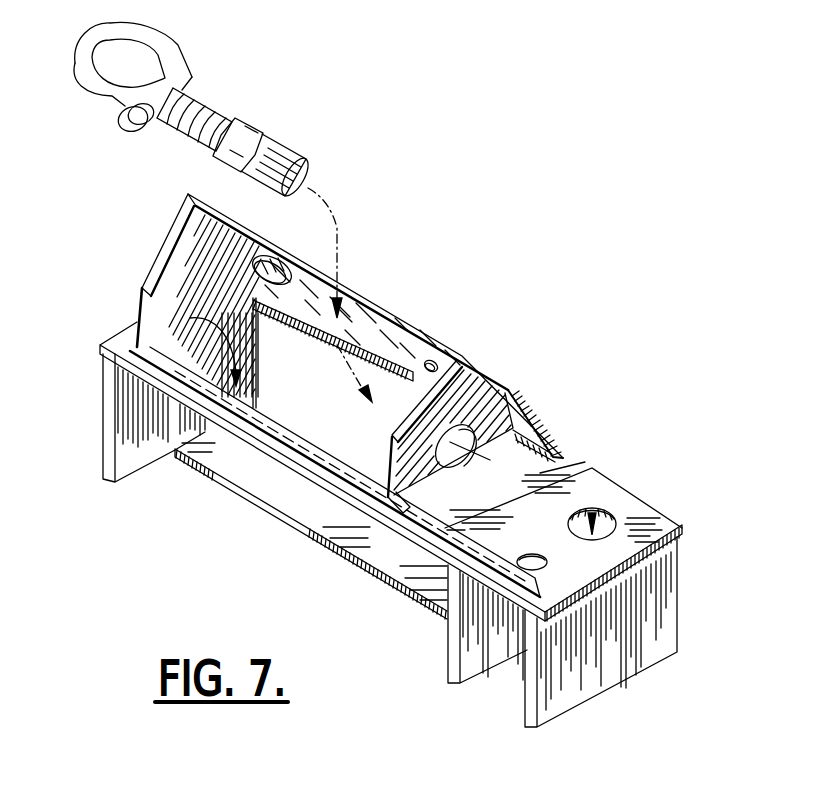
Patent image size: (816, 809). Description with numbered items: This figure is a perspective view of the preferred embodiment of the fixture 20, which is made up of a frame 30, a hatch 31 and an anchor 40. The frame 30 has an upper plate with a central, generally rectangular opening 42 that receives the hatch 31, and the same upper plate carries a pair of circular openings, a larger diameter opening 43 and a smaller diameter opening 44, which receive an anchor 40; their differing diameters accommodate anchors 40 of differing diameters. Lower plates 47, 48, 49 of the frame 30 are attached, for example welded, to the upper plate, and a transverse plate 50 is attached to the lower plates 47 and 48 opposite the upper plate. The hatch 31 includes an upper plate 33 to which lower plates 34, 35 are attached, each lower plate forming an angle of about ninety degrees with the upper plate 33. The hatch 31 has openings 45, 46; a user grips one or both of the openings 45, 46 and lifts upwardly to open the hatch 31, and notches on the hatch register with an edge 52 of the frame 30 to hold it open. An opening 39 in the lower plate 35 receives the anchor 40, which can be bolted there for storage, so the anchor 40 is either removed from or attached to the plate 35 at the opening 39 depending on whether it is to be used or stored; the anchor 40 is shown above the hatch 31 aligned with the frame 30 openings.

The fixture 20 is at (390, 539).
The frame 30 is at (418, 471).
The hatch 31 is at (330, 355).
The upper plate 33 is at (387, 337).
The lower plate 34 is at (153, 282).
The lower plate 35 is at (416, 438).
The opening 39 is at (451, 467).
The anchor 40 is at (220, 110).
The central rectangular opening 42 is at (196, 344).
The larger diameter opening 43 is at (603, 511).
The smaller diameter opening 44 is at (528, 540).
The opening 45 is at (291, 259).
The opening 46 is at (433, 366).
The lower plate 47 is at (132, 450).
The lower plate 48 is at (473, 653).
The lower plate 49 is at (553, 697).
The transverse plate 50 is at (391, 557).
The edge 52 is at (277, 430).